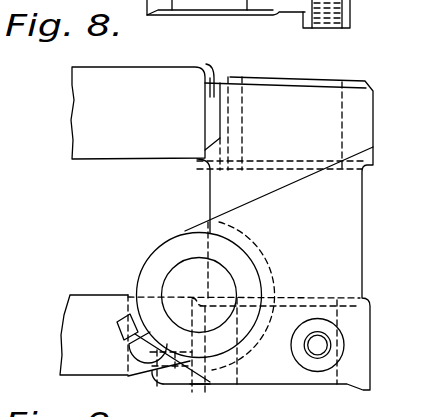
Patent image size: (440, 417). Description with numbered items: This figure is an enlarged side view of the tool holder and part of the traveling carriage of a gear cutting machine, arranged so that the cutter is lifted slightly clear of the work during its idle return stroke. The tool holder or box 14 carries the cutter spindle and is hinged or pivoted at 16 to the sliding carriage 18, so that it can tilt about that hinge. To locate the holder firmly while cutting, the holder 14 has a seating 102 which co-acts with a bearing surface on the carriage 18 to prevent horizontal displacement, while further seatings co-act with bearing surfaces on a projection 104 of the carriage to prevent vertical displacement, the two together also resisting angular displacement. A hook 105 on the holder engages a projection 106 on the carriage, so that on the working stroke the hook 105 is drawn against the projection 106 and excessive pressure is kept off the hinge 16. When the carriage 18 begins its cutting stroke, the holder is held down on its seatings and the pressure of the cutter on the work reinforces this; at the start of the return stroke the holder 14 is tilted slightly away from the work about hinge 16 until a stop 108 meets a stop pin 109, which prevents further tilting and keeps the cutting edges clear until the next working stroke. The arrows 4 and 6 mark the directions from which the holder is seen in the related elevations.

The tool holder or box 14 is at (250, 234).
The hinge or pivot 16 is at (178, 270).
The sliding carriage 18 is at (132, 221).
The seating 102 is at (204, 147).
The projection 104 is at (212, 76).
The hook 105 is at (160, 386).
The projection 106 is at (196, 387).
The stop 108 is at (147, 354).
The stop pin 109 is at (123, 317).
The arrow 4 is at (217, 33).
The arrow 6 is at (280, 409).